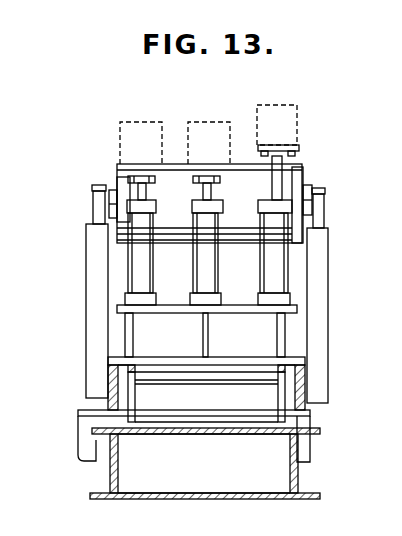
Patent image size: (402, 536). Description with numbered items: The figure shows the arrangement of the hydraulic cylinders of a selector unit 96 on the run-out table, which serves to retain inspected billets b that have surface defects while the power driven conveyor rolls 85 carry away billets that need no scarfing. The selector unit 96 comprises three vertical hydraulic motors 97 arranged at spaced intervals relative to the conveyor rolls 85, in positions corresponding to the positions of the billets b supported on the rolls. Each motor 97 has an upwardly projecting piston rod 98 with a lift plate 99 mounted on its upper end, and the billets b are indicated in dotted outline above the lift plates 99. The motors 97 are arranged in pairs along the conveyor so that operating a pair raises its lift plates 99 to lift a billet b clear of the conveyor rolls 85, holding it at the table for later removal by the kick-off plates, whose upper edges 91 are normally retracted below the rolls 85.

The billet b is at (127, 121).
The power driven conveyor roll 85 is at (303, 177).
The upper edge of kick-off plate 91 is at (174, 156).
The selector unit 96 is at (288, 277).
The vertical hydraulic motor 97 is at (270, 263).
The piston rod 98 is at (146, 181).
The lift plate 99 is at (294, 152).